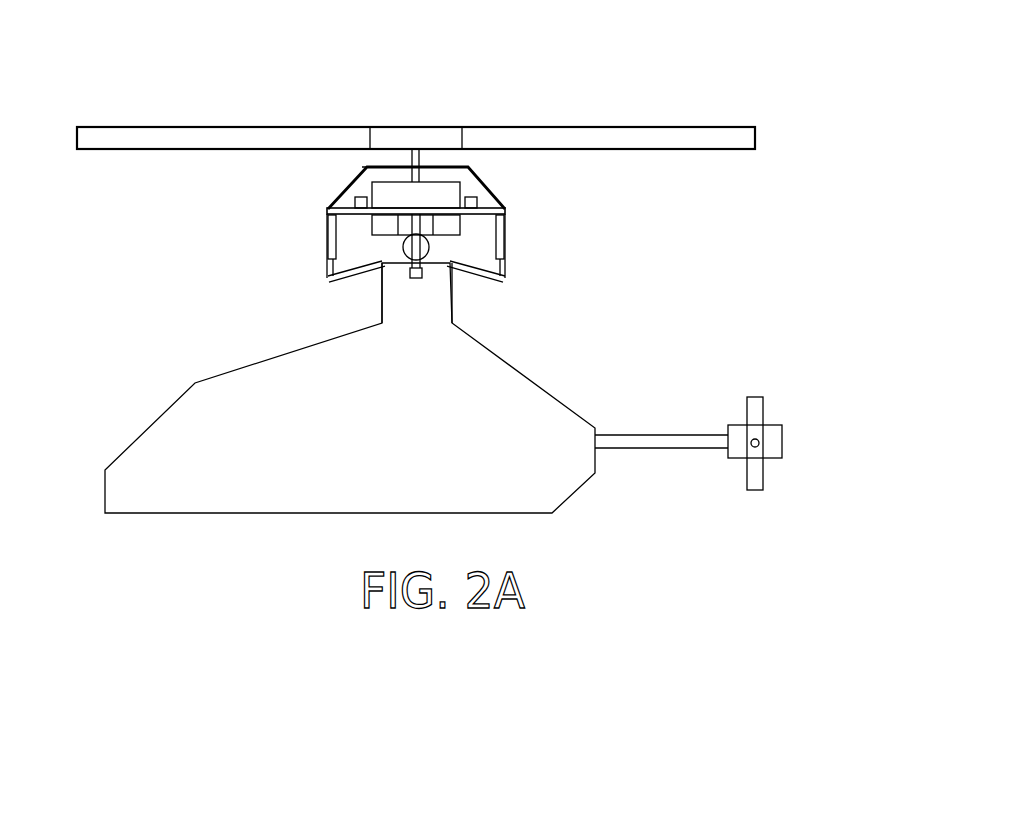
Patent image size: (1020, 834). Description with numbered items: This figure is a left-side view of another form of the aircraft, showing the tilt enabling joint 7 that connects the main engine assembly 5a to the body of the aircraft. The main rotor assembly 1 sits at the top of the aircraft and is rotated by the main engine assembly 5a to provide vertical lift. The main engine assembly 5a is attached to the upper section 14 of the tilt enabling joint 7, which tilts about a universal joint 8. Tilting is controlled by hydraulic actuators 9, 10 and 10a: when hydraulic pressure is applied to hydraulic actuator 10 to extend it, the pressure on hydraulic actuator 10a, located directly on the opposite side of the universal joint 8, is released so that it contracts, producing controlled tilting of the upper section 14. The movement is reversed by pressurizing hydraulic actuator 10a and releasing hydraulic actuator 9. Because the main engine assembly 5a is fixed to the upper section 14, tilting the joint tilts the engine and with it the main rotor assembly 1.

The main rotor assembly 1 is at (408, 118).
The upper section of the tilt enabling joint 14 is at (336, 205).
The main engine assembly 5a is at (428, 190).
The hydraulic actuator 10 is at (328, 241).
The hydraulic actuator 10a is at (502, 250).
The hydraulic actuator 9 is at (335, 270).
The universal joint 8 is at (442, 245).
The tilt enabling joint 7 is at (590, 230).